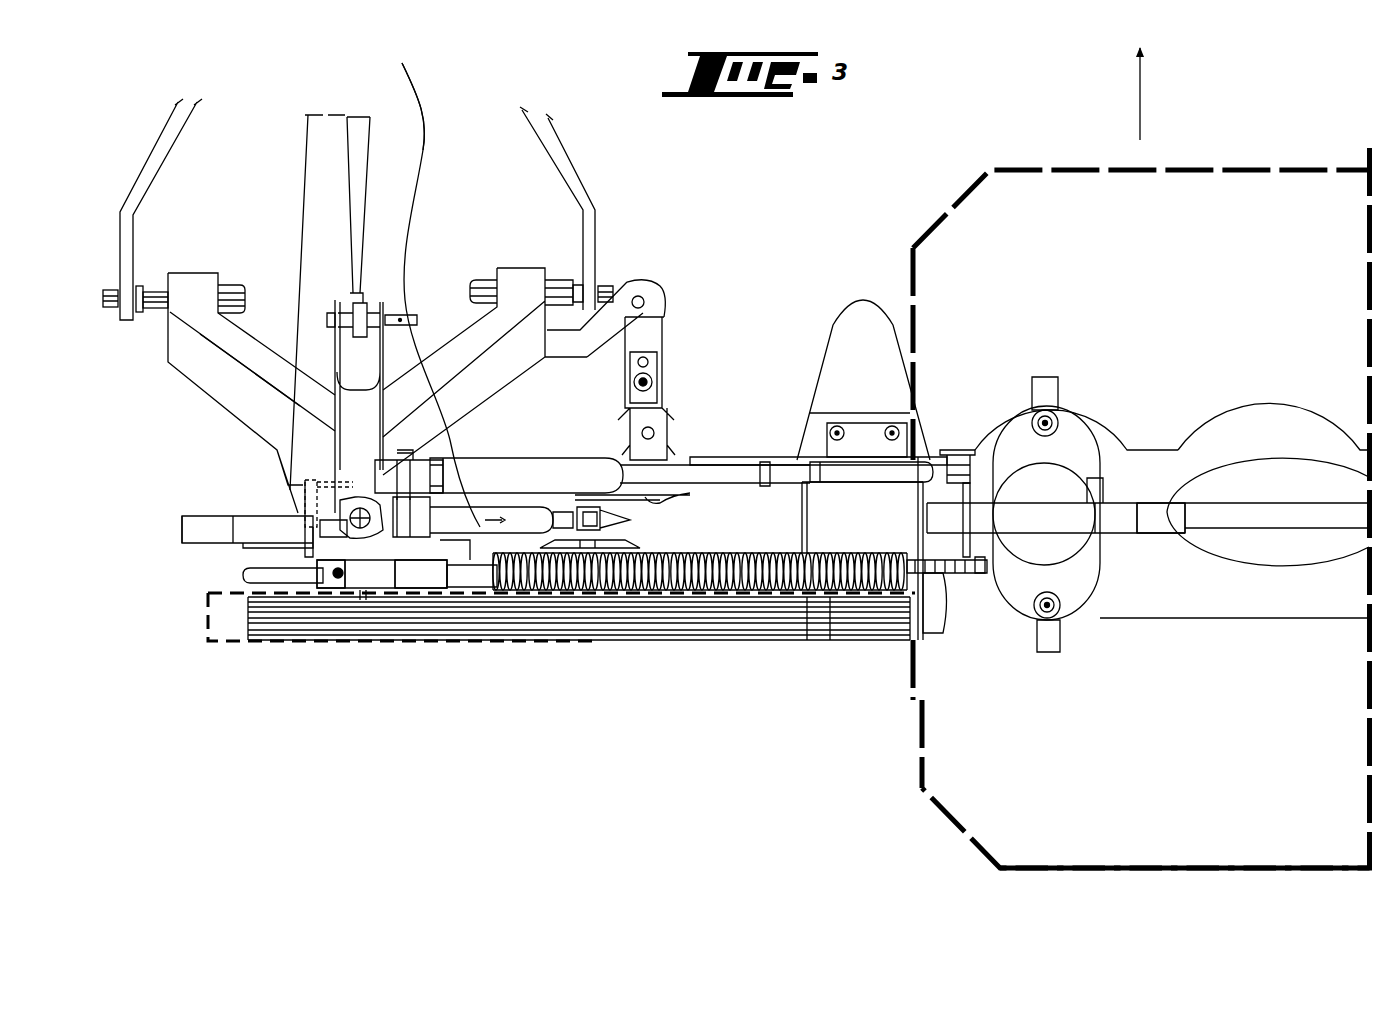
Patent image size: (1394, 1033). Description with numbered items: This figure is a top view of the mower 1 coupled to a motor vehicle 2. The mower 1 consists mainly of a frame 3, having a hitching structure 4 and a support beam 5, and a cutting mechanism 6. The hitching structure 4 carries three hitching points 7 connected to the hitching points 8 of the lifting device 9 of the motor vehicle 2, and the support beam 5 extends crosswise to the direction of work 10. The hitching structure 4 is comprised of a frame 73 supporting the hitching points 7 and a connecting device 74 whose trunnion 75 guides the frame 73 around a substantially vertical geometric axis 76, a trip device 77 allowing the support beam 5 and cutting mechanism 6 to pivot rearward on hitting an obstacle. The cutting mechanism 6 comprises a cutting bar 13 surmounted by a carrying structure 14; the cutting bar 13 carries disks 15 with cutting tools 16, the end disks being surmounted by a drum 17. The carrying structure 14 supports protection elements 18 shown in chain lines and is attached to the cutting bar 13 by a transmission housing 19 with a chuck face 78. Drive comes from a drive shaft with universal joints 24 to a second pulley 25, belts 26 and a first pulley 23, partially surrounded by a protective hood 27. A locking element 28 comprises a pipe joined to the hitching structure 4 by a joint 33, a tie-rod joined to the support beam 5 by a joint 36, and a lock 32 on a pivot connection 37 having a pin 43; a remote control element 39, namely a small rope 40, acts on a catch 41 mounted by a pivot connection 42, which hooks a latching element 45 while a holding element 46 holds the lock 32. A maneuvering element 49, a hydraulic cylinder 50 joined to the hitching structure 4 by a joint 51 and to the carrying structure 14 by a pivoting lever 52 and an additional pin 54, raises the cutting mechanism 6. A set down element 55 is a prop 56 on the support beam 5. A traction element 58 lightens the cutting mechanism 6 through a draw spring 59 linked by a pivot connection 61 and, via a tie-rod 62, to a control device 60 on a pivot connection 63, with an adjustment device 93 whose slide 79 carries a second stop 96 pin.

The mower 1 is at (797, 232).
The motor vehicle 2 is at (150, 143).
The frame 3 is at (770, 445).
The hitching structure 4 is at (166, 353).
The support beam 5 is at (728, 460).
The cutting mechanism 6 is at (1295, 405).
The hitching points 7 is at (148, 290).
The hitching points 8 is at (122, 292).
The lifting device 9 is at (537, 140).
The direction of work 10 is at (1142, 108).
The cutting bar 13 is at (1171, 450).
The carrying structure 14 is at (1308, 520).
The disks 15 is at (1088, 567).
The cutting tools 16 is at (1050, 385).
The drum 17 is at (1063, 567).
The protection elements 18 is at (1055, 869).
The transmission housing 19 is at (900, 526).
The first pulley 23 is at (865, 625).
The drive shaft with universal joints 24 is at (315, 143).
The second pulley 25 is at (267, 640).
The belts 26 is at (570, 622).
The protective hood 27 is at (207, 630).
The locking element 28 is at (457, 573).
The lock 32 is at (623, 520).
The joint 33 is at (363, 597).
The joint 36 is at (660, 605).
The pivot connection 37 is at (688, 655).
The remote control element 39 is at (428, 138).
The small rope 40 is at (417, 287).
The catch 41 is at (690, 493).
The pivot connection 42 is at (702, 657).
The pin 43 is at (596, 505).
The latching element 45 is at (1100, 490).
The holding element 46 is at (1180, 517).
The maneuvering element 49 is at (490, 455).
The hydraulic cylinder 50 is at (516, 483).
The joint 51 is at (407, 453).
The pivoting lever 52 is at (960, 455).
The additional pin 54 is at (967, 453).
The set down element 55 is at (180, 512).
The prop 56 is at (187, 547).
The traction element 58 is at (812, 597).
The draw spring 59 is at (841, 550).
The control device 60 is at (417, 573).
The pivot connection 61 is at (967, 573).
The tie-rod 62 is at (471, 552).
The pivot connection 63 is at (403, 553).
The frame 73 is at (215, 398).
The connecting device 74 is at (292, 515).
The trunnion 75 is at (350, 590).
The geometric axis 76 is at (363, 497).
The trip device 77 is at (658, 343).
The chuck face 78 is at (936, 457).
The slide 79 is at (978, 572).
The adjustment device 93 is at (920, 640).
The second stop 96 is at (937, 573).